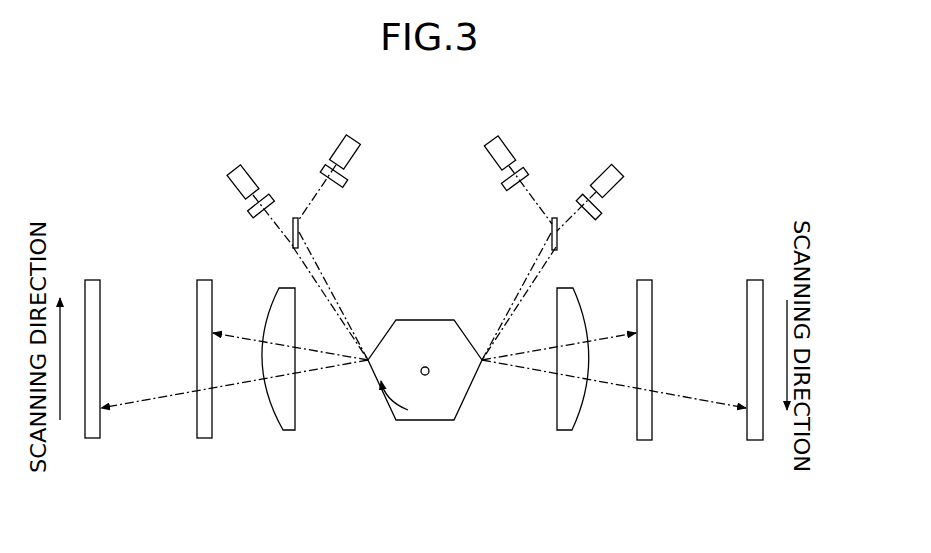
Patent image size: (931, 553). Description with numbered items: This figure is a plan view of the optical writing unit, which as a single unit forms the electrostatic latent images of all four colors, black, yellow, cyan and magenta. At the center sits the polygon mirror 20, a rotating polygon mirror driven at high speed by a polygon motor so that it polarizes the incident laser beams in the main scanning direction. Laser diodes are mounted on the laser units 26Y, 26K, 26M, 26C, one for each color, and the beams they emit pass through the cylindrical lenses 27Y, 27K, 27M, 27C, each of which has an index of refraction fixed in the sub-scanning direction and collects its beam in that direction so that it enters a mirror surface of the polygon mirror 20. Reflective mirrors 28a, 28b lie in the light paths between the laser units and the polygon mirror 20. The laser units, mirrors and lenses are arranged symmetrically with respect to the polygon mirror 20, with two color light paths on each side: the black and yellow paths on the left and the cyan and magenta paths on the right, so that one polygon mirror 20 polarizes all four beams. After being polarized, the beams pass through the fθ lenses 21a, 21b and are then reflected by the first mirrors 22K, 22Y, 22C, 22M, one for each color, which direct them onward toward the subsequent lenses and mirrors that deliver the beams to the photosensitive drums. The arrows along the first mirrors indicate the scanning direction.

The polygon mirror 20 is at (428, 421).
The fθ lens 21a is at (564, 430).
The fθ lens 21b is at (289, 430).
The first mirror 22K is at (92, 438).
The first mirror 22Y is at (204, 438).
The first mirror 22C is at (644, 440).
The first mirror 22M is at (756, 440).
The laser unit 26Y is at (229, 186).
The laser unit 26K is at (360, 165).
The laser unit 26M is at (488, 160).
The laser unit 26C is at (620, 185).
The cylindrical lens 27Y is at (252, 216).
The cylindrical lens 27K is at (343, 186).
The cylindrical lens 27M is at (506, 190).
The cylindrical lens 27C is at (600, 217).
The reflective mirror 28a is at (553, 218).
The reflective mirror 28b is at (295, 218).